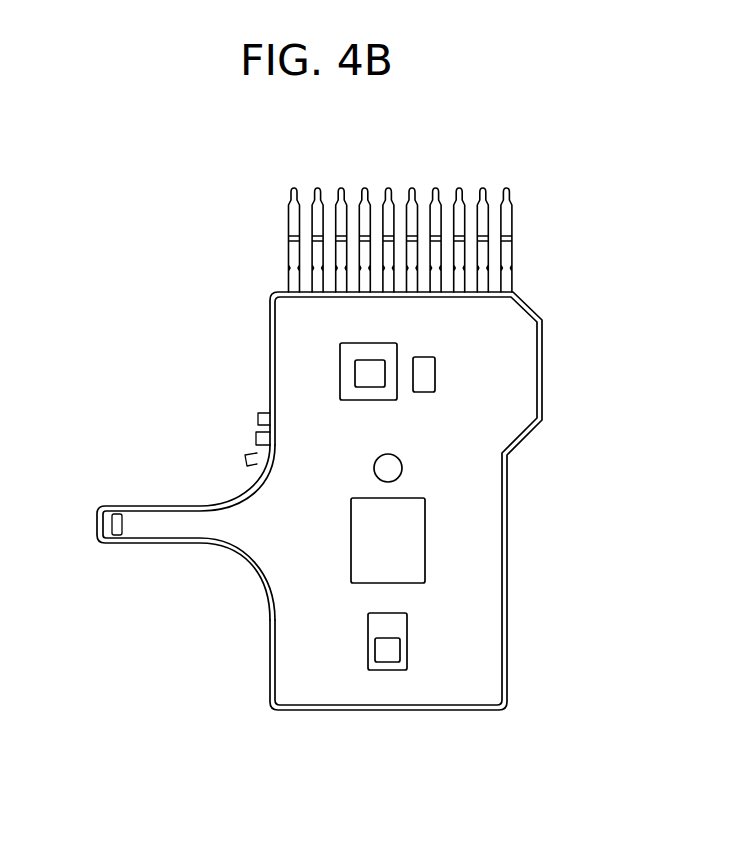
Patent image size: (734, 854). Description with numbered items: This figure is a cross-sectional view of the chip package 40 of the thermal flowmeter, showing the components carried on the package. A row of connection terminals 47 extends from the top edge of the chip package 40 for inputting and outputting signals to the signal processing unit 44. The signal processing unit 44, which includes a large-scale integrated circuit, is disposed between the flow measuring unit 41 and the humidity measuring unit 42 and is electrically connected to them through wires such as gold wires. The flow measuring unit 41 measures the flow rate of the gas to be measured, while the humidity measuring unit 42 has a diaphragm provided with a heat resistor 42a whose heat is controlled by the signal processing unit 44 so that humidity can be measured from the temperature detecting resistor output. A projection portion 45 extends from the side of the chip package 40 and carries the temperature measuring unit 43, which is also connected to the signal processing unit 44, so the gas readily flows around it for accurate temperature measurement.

The chip package 40 is at (497, 372).
The flow measuring unit 41 is at (387, 648).
The humidity measuring unit 42 is at (377, 380).
The heat resistor 42a is at (423, 372).
The temperature measuring unit 43 is at (117, 511).
The signal processing unit 44 is at (395, 522).
The projection portion 45 is at (173, 545).
The connection terminals 47 is at (513, 228).